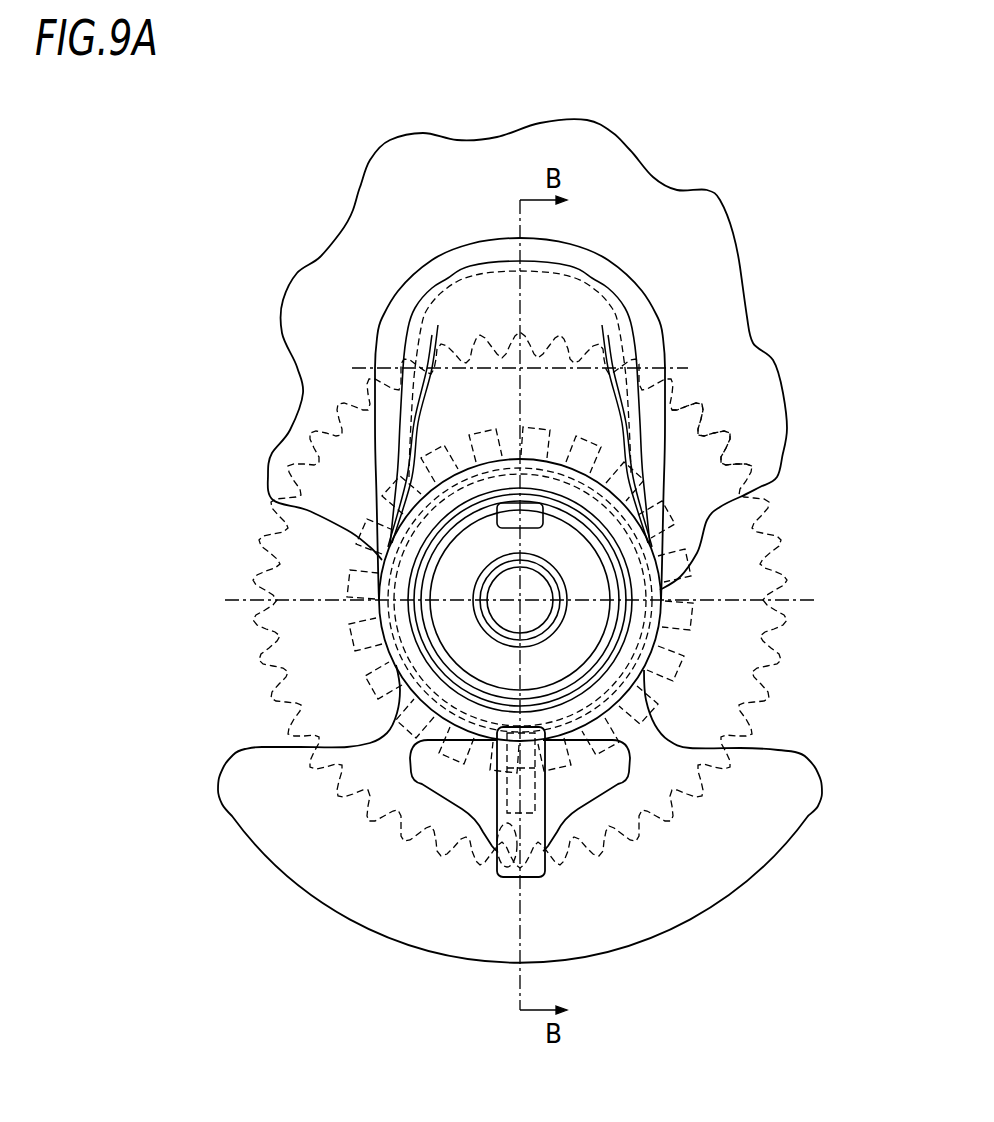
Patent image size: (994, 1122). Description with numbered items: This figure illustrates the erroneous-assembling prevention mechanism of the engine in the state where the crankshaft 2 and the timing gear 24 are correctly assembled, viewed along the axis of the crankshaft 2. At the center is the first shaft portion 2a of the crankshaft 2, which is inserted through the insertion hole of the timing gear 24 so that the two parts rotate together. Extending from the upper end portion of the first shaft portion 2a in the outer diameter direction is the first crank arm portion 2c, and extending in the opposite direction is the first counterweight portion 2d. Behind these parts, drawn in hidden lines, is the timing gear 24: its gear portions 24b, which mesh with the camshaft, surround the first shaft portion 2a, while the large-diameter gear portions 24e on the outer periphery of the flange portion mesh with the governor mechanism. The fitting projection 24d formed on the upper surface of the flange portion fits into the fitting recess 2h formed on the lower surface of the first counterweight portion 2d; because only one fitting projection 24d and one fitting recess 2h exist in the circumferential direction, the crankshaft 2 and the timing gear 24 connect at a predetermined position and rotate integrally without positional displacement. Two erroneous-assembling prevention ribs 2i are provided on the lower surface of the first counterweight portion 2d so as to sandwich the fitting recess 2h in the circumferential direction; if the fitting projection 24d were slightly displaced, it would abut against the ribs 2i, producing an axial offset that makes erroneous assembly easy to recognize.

The crankshaft 2 is at (470, 430).
The first shaft portion 2a is at (415, 563).
The first crank arm portion 2c is at (472, 325).
The first counterweight portion 2d is at (770, 787).
The fitting recess 2h is at (514, 866).
The erroneous-assembling prevention ribs 2i is at (441, 765).
The timing gear 24 is at (784, 535).
The gear portions 24b is at (697, 613).
The fitting projection 24d is at (547, 873).
The large-diameter gear portions 24e is at (723, 428).